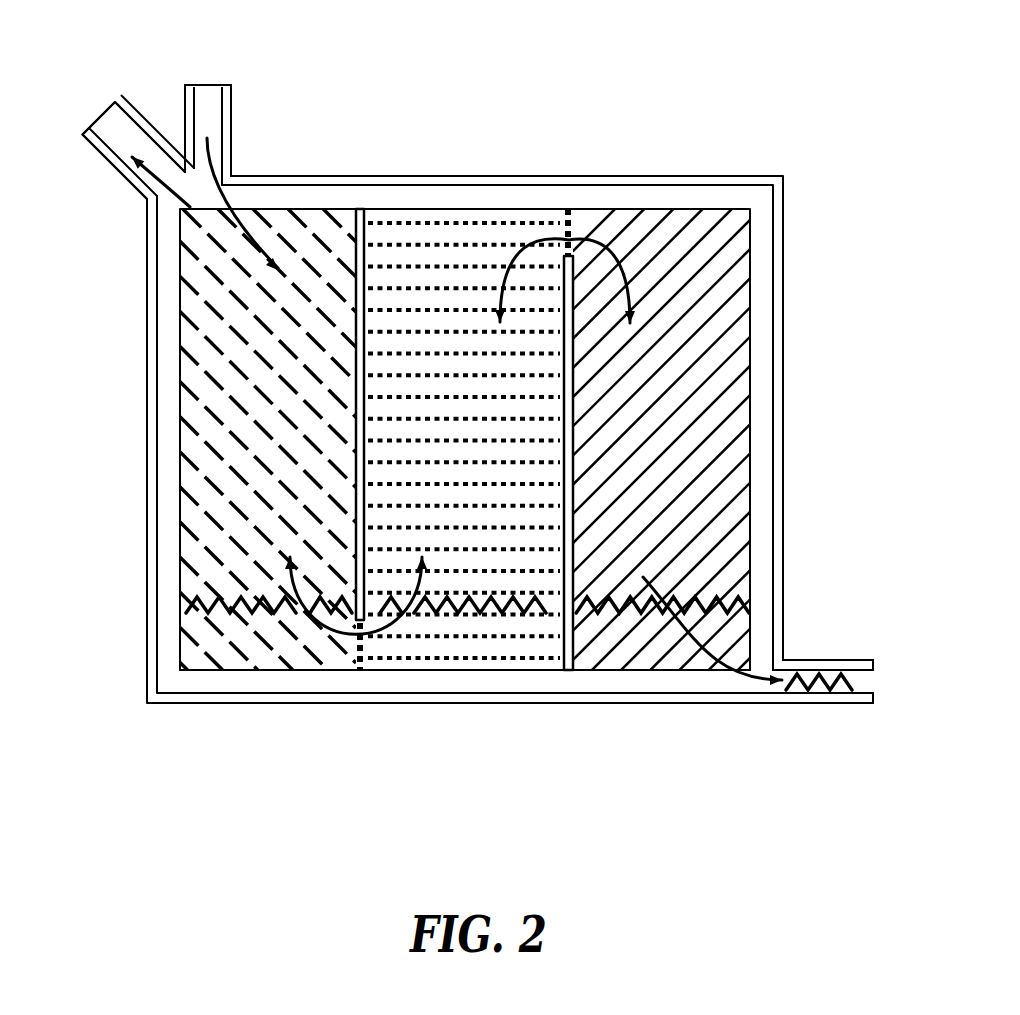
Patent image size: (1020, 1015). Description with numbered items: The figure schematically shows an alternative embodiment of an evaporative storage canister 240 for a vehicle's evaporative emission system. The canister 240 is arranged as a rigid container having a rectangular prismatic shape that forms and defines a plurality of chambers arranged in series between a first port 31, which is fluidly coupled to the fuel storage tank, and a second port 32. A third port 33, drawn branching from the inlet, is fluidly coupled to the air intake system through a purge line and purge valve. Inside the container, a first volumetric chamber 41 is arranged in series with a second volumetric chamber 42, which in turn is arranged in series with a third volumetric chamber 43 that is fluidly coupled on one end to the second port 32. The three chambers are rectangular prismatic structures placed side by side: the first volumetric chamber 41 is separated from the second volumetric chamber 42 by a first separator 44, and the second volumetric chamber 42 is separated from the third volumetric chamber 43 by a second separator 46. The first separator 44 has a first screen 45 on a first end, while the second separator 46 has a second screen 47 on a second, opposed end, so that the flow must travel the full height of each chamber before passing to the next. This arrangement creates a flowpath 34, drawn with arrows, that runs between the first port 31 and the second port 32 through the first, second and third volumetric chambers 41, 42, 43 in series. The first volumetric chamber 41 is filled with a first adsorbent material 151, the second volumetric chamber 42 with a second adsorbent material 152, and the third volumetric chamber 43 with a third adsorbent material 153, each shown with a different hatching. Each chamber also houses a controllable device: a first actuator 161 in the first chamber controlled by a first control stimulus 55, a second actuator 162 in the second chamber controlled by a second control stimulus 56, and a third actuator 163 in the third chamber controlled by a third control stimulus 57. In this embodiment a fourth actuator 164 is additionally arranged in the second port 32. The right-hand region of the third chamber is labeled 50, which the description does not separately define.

The canister 240 is at (760, 143).
The first port 31 is at (205, 107).
The second port 32 is at (866, 682).
The third port 33 is at (110, 130).
The flowpath 34 is at (215, 207).
The first volumetric chamber 41 is at (298, 205).
The second volumetric chamber 42 is at (455, 205).
The third volumetric chamber 43 is at (652, 207).
The first separator 44 is at (355, 502).
The first screen 45 is at (358, 647).
The second separator 46 is at (550, 602).
The second screen 47 is at (575, 232).
The third filter media 50 is at (693, 425).
The first control stimulus 55 is at (255, 675).
The second control stimulus 56 is at (458, 675).
The third control stimulus 57 is at (662, 672).
The first adsorbent material 151 is at (227, 397).
The second adsorbent material 152 is at (425, 638).
The third adsorbent material 153 is at (690, 537).
The first actuator 161 is at (215, 607).
The second actuator 162 is at (455, 615).
The third actuator 163 is at (652, 604).
The fourth actuator 164 is at (823, 678).